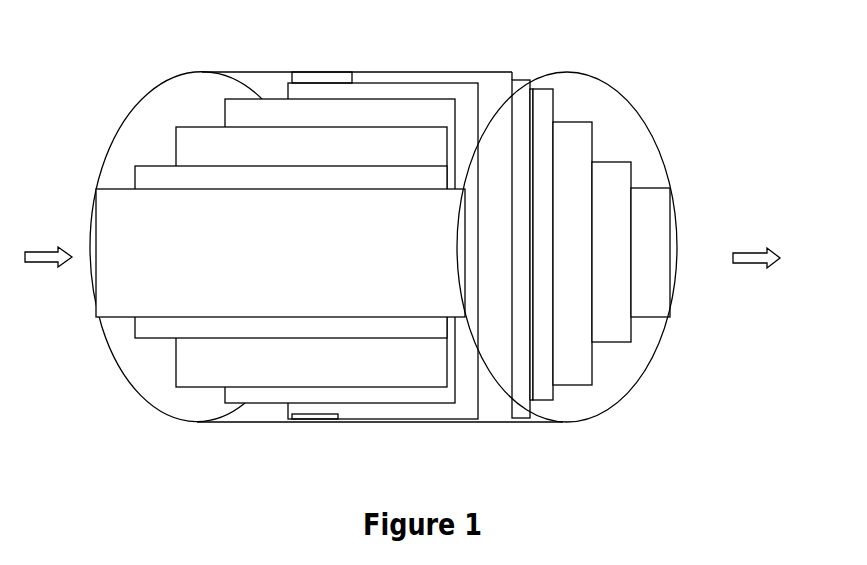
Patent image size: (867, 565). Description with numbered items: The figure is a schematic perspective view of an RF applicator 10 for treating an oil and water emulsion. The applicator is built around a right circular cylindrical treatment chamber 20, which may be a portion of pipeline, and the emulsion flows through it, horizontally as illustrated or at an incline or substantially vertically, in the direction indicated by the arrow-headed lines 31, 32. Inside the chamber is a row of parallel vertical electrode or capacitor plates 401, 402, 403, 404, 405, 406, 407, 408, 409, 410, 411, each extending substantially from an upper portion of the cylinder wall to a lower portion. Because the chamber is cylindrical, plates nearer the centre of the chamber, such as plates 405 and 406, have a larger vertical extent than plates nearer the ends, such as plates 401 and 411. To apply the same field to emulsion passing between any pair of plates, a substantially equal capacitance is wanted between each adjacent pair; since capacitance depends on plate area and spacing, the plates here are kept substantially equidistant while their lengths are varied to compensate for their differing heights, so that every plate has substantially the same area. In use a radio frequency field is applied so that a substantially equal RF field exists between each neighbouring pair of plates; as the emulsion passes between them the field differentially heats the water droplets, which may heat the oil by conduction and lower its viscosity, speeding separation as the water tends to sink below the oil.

The RF applicator 10 is at (752, 54).
The treatment chamber 20 is at (656, 142).
The arrow-headed line 31 is at (38, 262).
The arrow-headed line 32 is at (747, 263).
The electrode or capacitor plate 401 is at (90, 219).
The electrode or capacitor plate 402 is at (135, 183).
The electrode or capacitor plate 403 is at (176, 148).
The electrode or capacitor plate 404 is at (225, 115).
The electrode or capacitor plate 405 is at (287, 98).
The electrode or capacitor plate 406 is at (514, 75).
The electrode or capacitor plate 407 is at (533, 102).
The electrode or capacitor plate 408 is at (554, 113).
The electrode or capacitor plate 409 is at (593, 147).
The electrode or capacitor plate 410 is at (632, 177).
The electrode or capacitor plate 411 is at (673, 230).